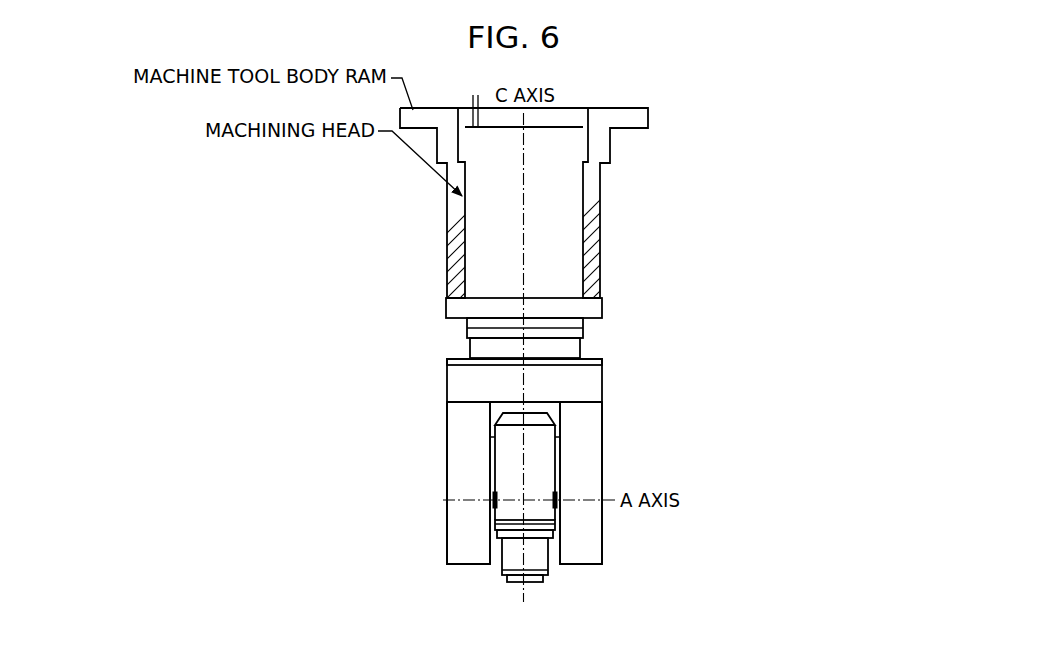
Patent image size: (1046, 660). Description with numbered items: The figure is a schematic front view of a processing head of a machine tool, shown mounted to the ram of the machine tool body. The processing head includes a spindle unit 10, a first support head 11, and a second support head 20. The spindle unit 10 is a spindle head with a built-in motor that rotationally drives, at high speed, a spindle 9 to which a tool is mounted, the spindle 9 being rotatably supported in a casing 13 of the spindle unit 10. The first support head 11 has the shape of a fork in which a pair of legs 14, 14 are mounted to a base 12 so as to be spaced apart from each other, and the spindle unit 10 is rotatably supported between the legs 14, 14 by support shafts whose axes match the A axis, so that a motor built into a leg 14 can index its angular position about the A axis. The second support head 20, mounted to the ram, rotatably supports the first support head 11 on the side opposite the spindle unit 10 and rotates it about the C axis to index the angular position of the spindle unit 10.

The second support head 20 is at (581, 215).
The base 12 is at (592, 388).
The first support head 11 is at (611, 414).
The spindle unit 10 is at (561, 459).
The casing 13 is at (508, 458).
The legs 14 is at (455, 480).
The spindle 9 is at (533, 584).